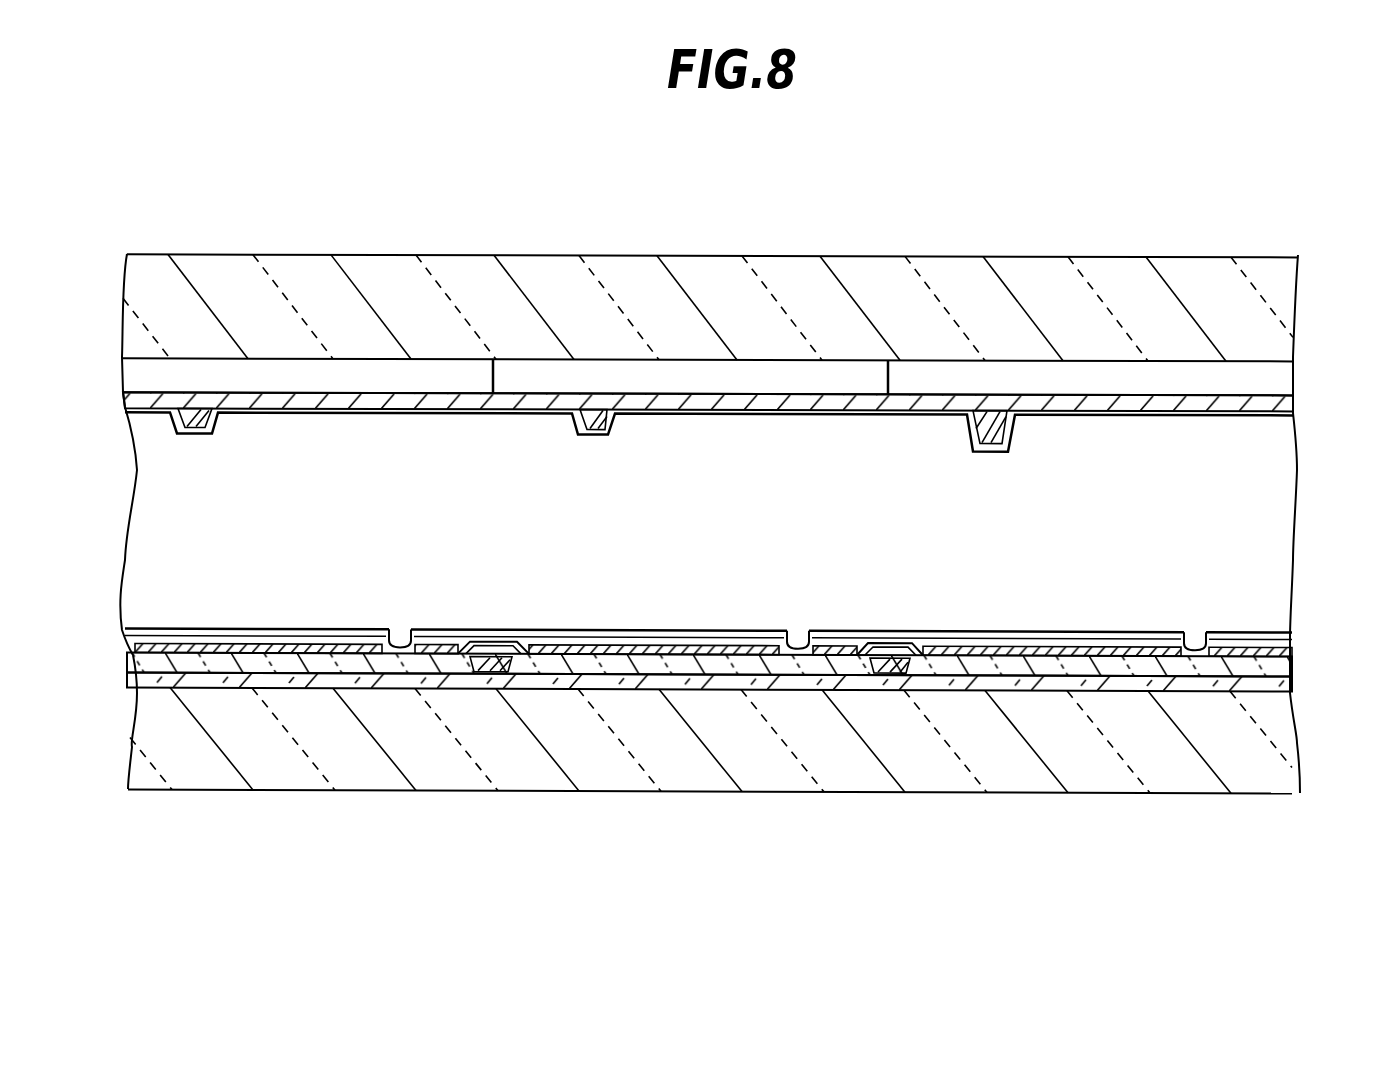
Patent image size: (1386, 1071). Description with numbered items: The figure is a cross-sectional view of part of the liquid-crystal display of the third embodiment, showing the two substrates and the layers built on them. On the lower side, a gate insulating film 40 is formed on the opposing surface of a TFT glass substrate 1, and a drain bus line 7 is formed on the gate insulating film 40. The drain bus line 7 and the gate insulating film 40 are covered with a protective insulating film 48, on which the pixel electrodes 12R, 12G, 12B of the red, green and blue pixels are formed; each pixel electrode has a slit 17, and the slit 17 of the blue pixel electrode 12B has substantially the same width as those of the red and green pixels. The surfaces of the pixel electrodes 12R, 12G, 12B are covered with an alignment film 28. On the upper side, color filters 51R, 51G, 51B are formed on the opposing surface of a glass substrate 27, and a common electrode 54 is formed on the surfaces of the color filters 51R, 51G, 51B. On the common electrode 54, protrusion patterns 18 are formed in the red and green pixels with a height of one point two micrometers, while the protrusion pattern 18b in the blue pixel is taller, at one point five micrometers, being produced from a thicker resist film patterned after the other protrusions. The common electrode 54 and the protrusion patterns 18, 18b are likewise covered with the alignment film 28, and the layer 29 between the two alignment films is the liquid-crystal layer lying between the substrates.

The TFT glass substrate 1 is at (1292, 742).
The drain bus line 7 is at (497, 665).
The pixel electrode of red pixel 12R is at (306, 650).
The pixel electrode of green pixel 12G is at (702, 650).
The pixel electrode of blue pixel 12B is at (1090, 650).
The slit 17 is at (383, 648).
The protrusion pattern 18 is at (186, 435).
The protrusion pattern in blue pixel 18b is at (985, 452).
The glass substrate 27 is at (1292, 296).
The alignment film 28 is at (1293, 412).
The liquid crystal layer 29 is at (1293, 528).
The gate insulating film 40 is at (1292, 685).
The protective insulating film 48 is at (1292, 662).
The red color filter 51R is at (250, 372).
The green color filter 51G is at (636, 372).
The blue color filter 51B is at (1045, 372).
The common electrode 54 is at (1293, 404).